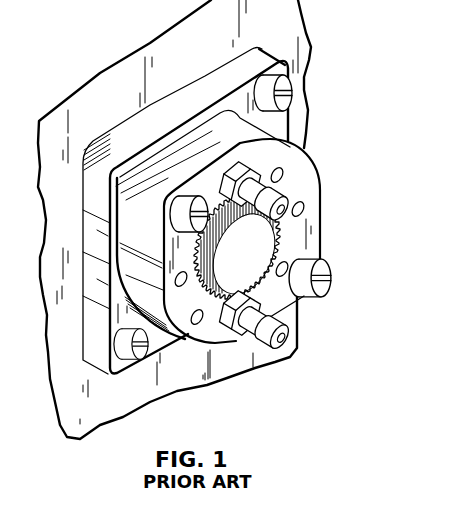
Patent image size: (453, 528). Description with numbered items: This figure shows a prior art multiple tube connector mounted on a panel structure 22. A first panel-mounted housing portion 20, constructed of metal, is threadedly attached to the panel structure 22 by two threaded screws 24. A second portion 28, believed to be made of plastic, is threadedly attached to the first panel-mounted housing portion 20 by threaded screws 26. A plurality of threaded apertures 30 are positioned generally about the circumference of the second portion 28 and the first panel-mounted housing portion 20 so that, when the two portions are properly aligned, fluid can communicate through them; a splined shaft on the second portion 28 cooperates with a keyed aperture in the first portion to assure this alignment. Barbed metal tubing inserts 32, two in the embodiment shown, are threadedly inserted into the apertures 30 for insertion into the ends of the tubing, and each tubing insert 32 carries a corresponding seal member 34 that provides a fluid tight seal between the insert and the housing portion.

The first panel-mounted housing portion 20 is at (286, 61).
The panel structure 22 is at (135, 50).
The threaded screws 24 is at (292, 96).
The threaded screws 26 is at (308, 298).
The second portion 28 is at (298, 189).
The threaded apertures 30 is at (303, 210).
The barbed metal tubing inserts 32 is at (278, 338).
The seal member 34 is at (289, 146).